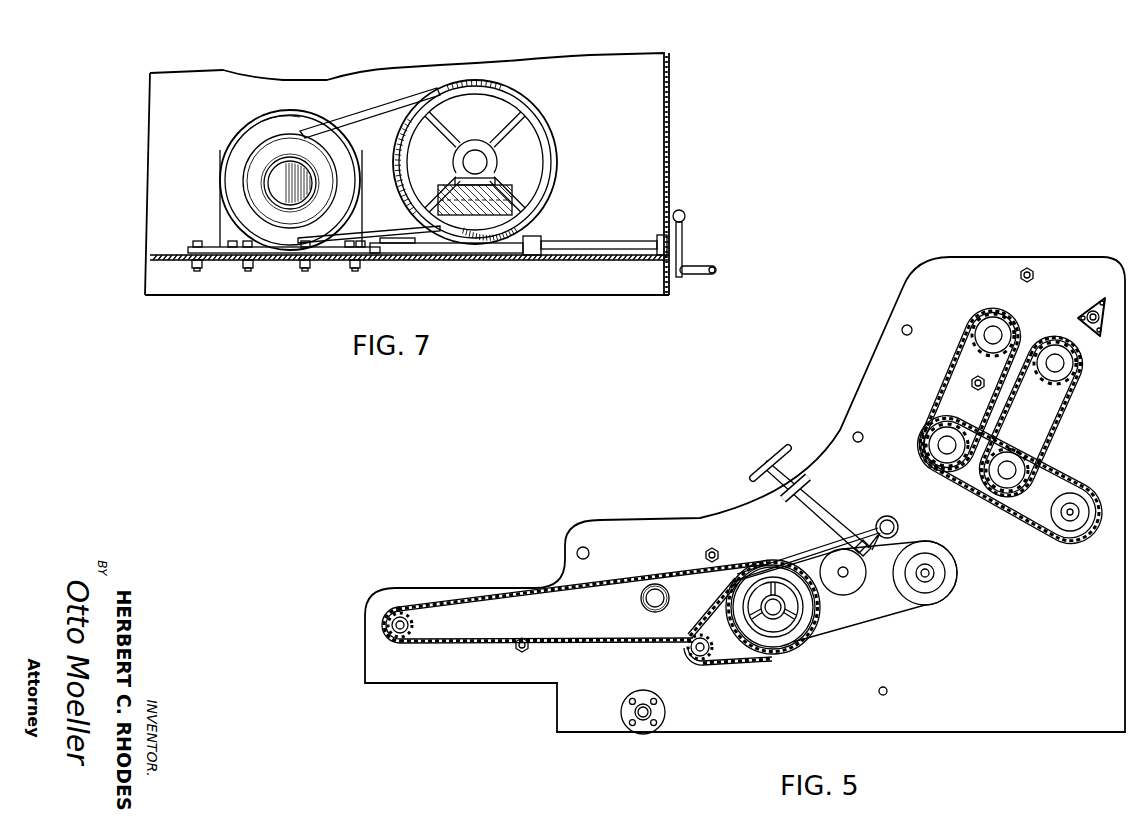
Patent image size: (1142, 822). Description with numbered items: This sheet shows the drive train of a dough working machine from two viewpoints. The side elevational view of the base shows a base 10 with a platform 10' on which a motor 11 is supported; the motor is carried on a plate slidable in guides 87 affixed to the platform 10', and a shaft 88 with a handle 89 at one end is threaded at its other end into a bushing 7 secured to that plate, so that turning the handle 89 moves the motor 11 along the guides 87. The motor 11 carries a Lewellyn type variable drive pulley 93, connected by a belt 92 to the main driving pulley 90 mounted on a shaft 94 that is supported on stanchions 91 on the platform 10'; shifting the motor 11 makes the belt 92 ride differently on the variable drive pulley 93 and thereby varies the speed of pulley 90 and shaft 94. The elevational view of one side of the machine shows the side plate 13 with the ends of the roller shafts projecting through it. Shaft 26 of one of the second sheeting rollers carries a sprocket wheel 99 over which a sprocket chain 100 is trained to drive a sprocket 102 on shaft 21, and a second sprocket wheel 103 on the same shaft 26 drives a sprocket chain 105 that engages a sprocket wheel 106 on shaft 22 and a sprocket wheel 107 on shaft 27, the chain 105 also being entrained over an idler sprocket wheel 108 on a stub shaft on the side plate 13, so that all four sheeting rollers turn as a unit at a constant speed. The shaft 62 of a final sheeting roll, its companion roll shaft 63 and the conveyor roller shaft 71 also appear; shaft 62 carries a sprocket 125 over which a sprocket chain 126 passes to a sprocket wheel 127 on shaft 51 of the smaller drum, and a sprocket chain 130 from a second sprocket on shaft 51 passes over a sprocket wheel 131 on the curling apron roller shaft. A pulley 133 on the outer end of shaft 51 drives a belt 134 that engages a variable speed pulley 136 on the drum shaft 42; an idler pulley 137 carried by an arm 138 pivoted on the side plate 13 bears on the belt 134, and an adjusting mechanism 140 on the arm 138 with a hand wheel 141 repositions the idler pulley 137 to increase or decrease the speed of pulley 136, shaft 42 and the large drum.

In FIG. 7, the bushing 7 is at (392, 243).
In FIG. 7, the base 10 is at (431, 174).
In FIG. 7, the platform 10' is at (409, 270).
In FIG. 7, the motor 11 is at (237, 133).
In FIG. 7, the guides 87 is at (210, 247).
In FIG. 7, the shaft 88 is at (583, 241).
In FIG. 7, the handle 89 is at (717, 270).
In FIG. 7, the main driving pulley 90 is at (556, 122).
In FIG. 7, the stanchions 91 is at (532, 236).
In FIG. 7, the belt 92 is at (347, 120).
In FIG. 7, the variable drive pulley 93 is at (250, 185).
In FIG. 7, the shaft 94 is at (487, 162).
In FIG. 5, the side plate 13 is at (577, 532).
In FIG. 5, the shaft 21 is at (1056, 366).
In FIG. 5, the shaft 22 is at (990, 333).
In FIG. 5, the shaft 26 is at (1012, 490).
In FIG. 5, the shaft 27 is at (945, 446).
In FIG. 5, the shaft 42 is at (926, 580).
In FIG. 5, the shaft 51 is at (771, 603).
In FIG. 5, the shaft 62 is at (700, 657).
In FIG. 5, the shaft 63 is at (654, 600).
In FIG. 5, the shaft 71 is at (643, 712).
In FIG. 5, the sprocket wheel 99 is at (1005, 450).
In FIG. 5, the sprocket chain 100 is at (1056, 422).
In FIG. 5, the sprocket 102 is at (1040, 342).
In FIG. 5, the second sprocket wheel 103 is at (1020, 463).
In FIG. 5, the sprocket chain 105 is at (950, 390).
In FIG. 5, the sprocket wheel 106 is at (995, 361).
In FIG. 5, the sprocket wheel 107 is at (940, 423).
In FIG. 5, the idler sprocket wheel 108 is at (1067, 533).
In FIG. 5, the sprocket 125 is at (718, 655).
In FIG. 5, the sprocket chain 126 is at (740, 666).
In FIG. 5, the sprocket wheel 127 is at (766, 563).
In FIG. 5, the sprocket chain 130 is at (568, 644).
In FIG. 5, the sprocket wheel 131 is at (413, 632).
In FIG. 5, the pulley 133 is at (784, 640).
In FIG. 5, the belt 134 is at (848, 628).
In FIG. 5, the variable speed pulley 136 is at (948, 587).
In FIG. 5, the idler pulley 137 is at (848, 588).
In FIG. 5, the arm 138 is at (858, 542).
In FIG. 5, the adjusting mechanism 140 is at (830, 535).
In FIG. 5, the hand wheel 141 is at (758, 470).